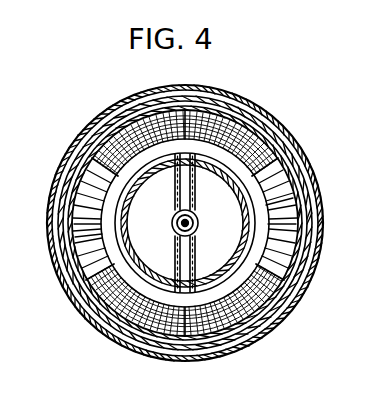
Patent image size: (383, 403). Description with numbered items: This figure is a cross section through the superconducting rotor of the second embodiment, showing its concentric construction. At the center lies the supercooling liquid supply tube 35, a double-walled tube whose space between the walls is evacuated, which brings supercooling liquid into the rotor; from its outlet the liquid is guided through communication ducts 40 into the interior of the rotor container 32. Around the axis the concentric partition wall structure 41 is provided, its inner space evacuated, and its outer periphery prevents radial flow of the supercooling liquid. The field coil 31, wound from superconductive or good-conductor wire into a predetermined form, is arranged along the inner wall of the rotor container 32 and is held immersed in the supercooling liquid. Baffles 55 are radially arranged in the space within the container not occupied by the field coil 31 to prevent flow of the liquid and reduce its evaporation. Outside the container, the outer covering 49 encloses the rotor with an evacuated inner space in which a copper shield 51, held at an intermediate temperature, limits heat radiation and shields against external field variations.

The field coil 31 is at (257, 142).
The rotor container 32 is at (273, 313).
The supercooling liquid supply tube 35 is at (200, 227).
The communication ducts 40 is at (178, 243).
The partition wall structure 41 is at (263, 205).
The outer covering 49 is at (235, 352).
The shield 51 is at (260, 343).
The baffles 55 is at (288, 233).